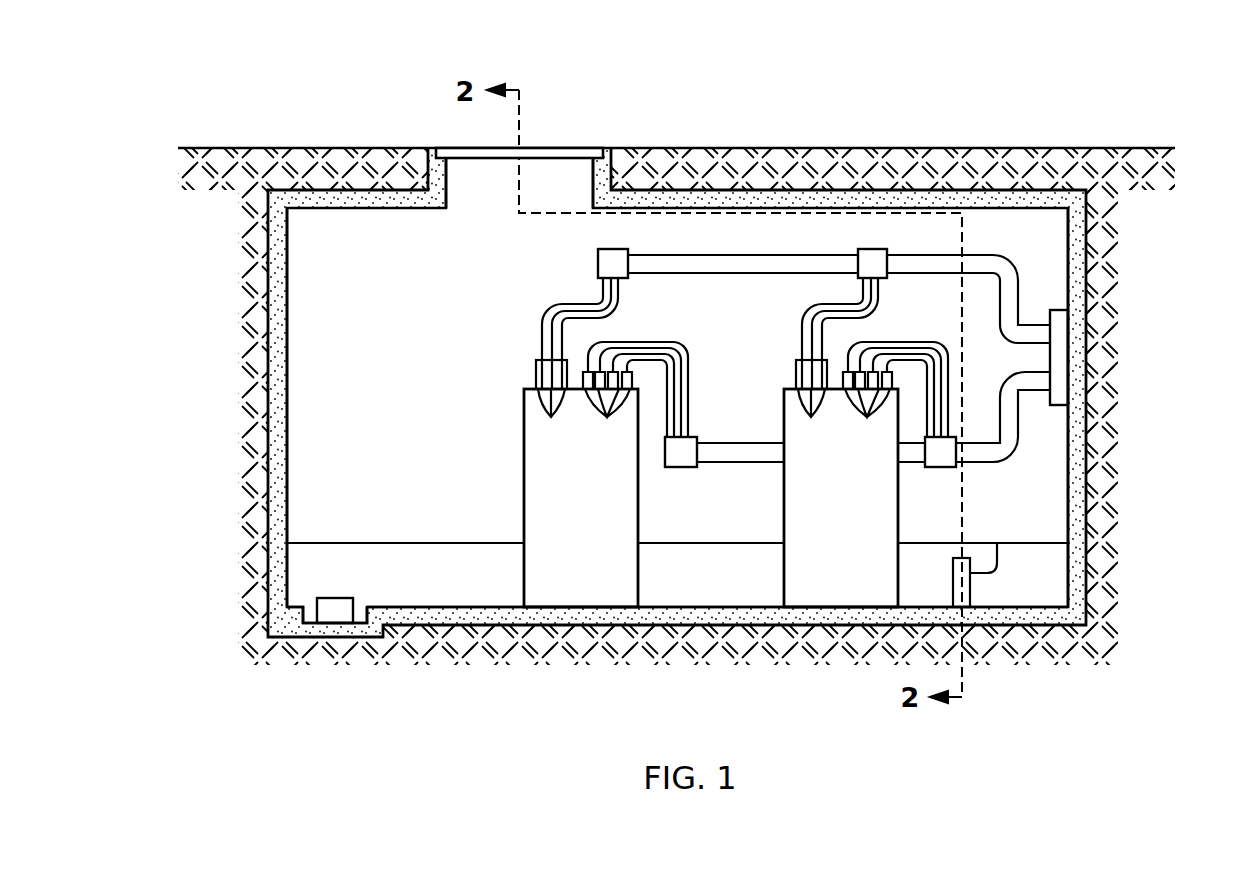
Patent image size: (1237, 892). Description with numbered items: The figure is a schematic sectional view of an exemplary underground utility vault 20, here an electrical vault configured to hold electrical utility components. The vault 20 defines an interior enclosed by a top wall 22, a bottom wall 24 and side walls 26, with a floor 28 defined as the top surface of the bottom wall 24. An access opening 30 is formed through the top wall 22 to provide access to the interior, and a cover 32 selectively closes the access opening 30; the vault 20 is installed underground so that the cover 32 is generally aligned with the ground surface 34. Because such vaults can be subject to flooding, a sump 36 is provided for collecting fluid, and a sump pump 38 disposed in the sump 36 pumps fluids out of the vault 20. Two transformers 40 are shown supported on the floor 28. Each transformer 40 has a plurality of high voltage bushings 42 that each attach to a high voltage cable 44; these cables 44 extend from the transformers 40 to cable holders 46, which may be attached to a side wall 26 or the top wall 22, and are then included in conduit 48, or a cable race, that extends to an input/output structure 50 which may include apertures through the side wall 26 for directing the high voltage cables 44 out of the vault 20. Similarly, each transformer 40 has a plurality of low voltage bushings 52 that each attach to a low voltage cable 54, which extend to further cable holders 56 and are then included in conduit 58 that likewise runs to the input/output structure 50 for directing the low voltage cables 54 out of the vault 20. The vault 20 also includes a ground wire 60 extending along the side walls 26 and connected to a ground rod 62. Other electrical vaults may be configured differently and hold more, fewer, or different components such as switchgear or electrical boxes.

The underground utility vault 20 is at (1152, 270).
The top wall 22 is at (798, 198).
The bottom wall 24 is at (678, 615).
The side walls 26 is at (1078, 449).
The floor 28 is at (703, 606).
The access opening 30 is at (557, 175).
The cover 32 is at (473, 150).
The ground surface 34 is at (1022, 147).
The sump 36 is at (303, 617).
The sump pump 38 is at (333, 598).
The transformers 40 is at (843, 580).
The high voltage bushings 42 is at (679, 411).
The high voltage cable 44 is at (822, 336).
The cable holders 46 is at (868, 250).
The conduit 48 is at (1017, 300).
The input/output structure 50 is at (1060, 353).
The low voltage bushing 52 is at (737, 417).
The low voltage cable 54 is at (914, 360).
The cable holders 56 is at (938, 468).
The conduit 58 is at (1012, 418).
The ground wire 60 is at (1037, 543).
The ground rod 62 is at (968, 590).